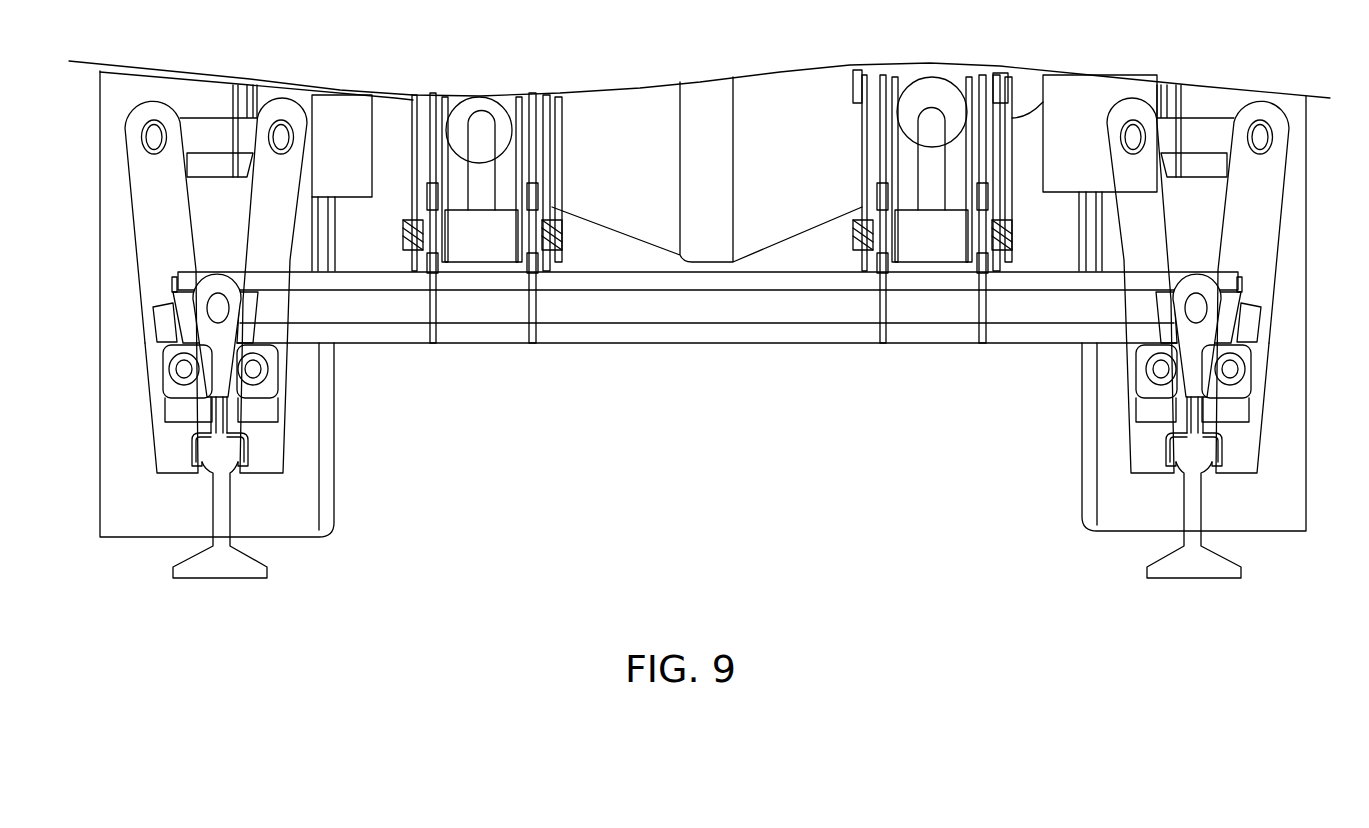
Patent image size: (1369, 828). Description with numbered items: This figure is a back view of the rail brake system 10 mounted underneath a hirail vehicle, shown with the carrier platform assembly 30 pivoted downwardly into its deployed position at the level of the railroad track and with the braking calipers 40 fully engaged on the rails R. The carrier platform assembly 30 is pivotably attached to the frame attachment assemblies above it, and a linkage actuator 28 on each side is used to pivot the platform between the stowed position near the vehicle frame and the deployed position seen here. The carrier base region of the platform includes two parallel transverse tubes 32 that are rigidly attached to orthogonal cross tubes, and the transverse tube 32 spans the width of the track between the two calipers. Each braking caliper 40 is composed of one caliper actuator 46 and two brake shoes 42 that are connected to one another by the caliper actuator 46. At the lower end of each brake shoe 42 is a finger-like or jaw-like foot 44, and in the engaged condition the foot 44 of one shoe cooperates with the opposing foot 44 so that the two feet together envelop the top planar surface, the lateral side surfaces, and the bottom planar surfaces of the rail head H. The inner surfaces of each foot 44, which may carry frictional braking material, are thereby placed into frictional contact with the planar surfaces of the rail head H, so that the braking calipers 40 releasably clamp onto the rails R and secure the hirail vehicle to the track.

The rail brake system 10 is at (606, 466).
The linkage actuator 28 is at (462, 138).
The carrier platform assembly 30 is at (748, 366).
The transverse tube 32 is at (627, 308).
The braking caliper 40 is at (112, 390).
The brake shoe 42 is at (263, 252).
The foot 44 is at (178, 455).
The caliper actuator 46 is at (340, 147).
The rail head H is at (205, 445).
The rail R is at (220, 550).